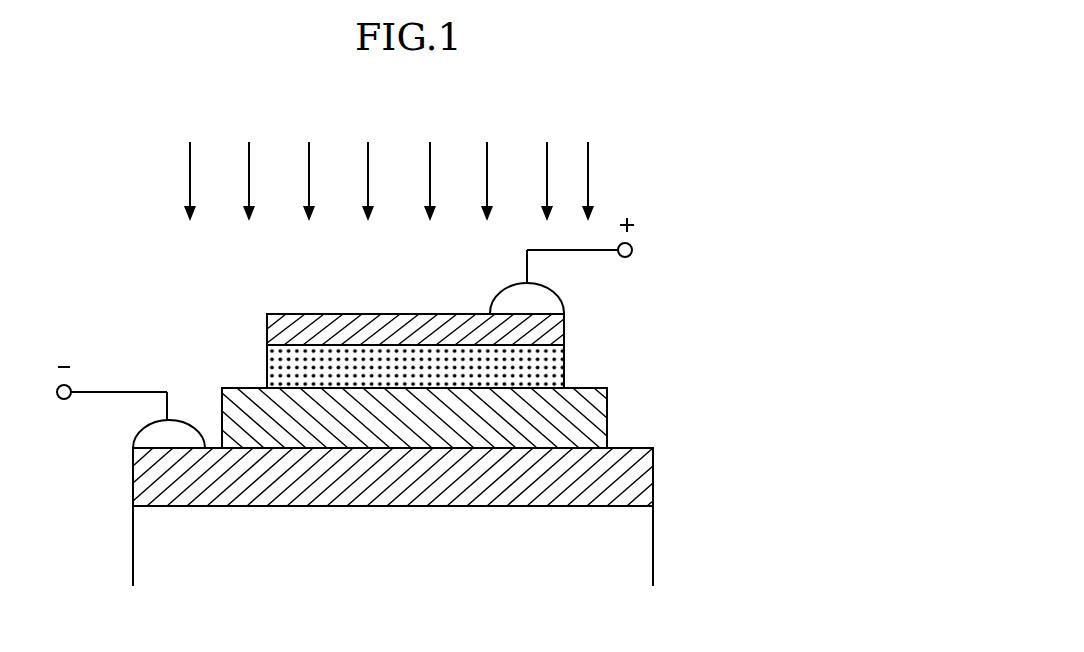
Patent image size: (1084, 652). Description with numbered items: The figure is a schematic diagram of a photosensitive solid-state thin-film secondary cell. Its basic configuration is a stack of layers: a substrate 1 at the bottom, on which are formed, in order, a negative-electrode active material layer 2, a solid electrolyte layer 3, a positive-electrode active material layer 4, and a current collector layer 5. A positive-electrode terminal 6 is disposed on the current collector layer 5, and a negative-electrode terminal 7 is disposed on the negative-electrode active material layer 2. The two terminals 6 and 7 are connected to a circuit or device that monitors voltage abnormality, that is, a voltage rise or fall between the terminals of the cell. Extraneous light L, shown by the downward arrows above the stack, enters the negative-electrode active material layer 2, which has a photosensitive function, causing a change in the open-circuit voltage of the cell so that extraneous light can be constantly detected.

The substrate 1 is at (655, 527).
The negative-electrode active material layer 2 is at (655, 462).
The solid electrolyte layer 3 is at (607, 418).
The positive-electrode active material layer 4 is at (564, 358).
The current collector layer 5 is at (564, 322).
The positive-electrode terminal 6 is at (565, 288).
The negative-electrode terminal 7 is at (183, 423).
The extraneous light L is at (389, 153).